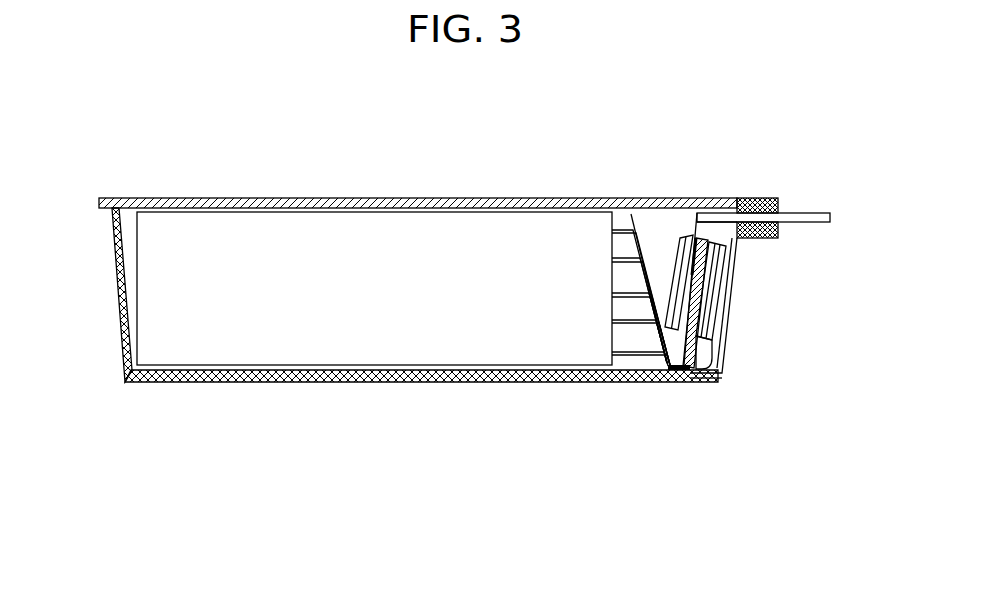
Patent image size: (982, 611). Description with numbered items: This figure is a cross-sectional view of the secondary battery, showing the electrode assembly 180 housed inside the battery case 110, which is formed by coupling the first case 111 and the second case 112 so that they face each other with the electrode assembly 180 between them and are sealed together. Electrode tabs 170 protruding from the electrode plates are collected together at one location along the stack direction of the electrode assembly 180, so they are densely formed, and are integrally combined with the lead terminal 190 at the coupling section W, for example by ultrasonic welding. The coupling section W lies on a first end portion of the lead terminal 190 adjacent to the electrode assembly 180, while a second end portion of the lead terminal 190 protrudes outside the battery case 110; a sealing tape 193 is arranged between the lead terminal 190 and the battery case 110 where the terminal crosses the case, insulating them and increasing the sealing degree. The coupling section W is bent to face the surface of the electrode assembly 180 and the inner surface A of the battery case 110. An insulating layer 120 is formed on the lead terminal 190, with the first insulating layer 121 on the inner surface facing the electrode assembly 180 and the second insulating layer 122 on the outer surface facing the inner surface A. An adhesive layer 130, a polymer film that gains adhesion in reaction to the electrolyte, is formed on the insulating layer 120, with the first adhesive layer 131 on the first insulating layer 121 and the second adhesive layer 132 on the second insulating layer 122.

The battery case 110 is at (395, 300).
The first case 111 is at (422, 198).
The second case 112 is at (445, 383).
The insulating layer 120 is at (716, 295).
The first insulating layer 121 is at (697, 213).
The second insulating layer 122 is at (700, 382).
The adhesive layer 130 is at (750, 239).
The first adhesive layer 131 is at (682, 237).
The second adhesive layer 132 is at (728, 310).
The electrode tabs 170 is at (628, 226).
The electrode assembly 180 is at (331, 333).
The lead terminal 190 is at (813, 212).
The sealing tape 193 is at (772, 198).
The coupling section W is at (730, 275).
The inner surface of the battery case A is at (706, 344).